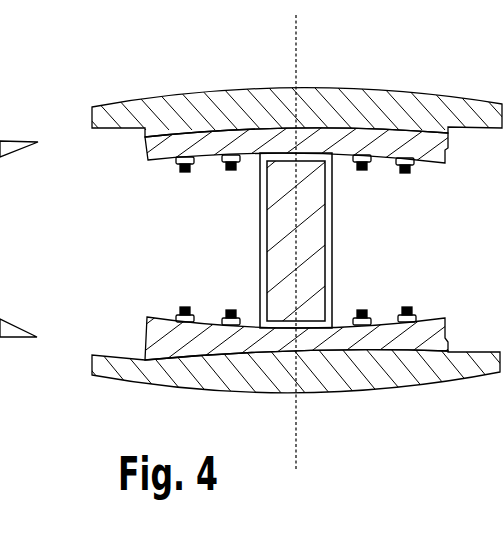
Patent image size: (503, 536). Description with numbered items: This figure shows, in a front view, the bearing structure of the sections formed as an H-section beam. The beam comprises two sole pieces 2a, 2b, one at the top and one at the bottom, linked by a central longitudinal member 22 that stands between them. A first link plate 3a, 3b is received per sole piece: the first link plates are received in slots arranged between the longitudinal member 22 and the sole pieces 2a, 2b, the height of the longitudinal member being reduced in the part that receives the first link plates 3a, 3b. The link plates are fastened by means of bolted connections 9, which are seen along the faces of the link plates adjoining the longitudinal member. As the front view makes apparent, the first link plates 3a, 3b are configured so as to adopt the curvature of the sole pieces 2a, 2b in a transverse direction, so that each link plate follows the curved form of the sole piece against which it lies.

The sole piece 2a is at (384, 110).
The sole piece 2b is at (366, 383).
The first link plate 3a is at (165, 151).
The first link plate 3b is at (157, 325).
The longitudinal member 22 is at (273, 268).
The bolted connection 9 is at (405, 173).